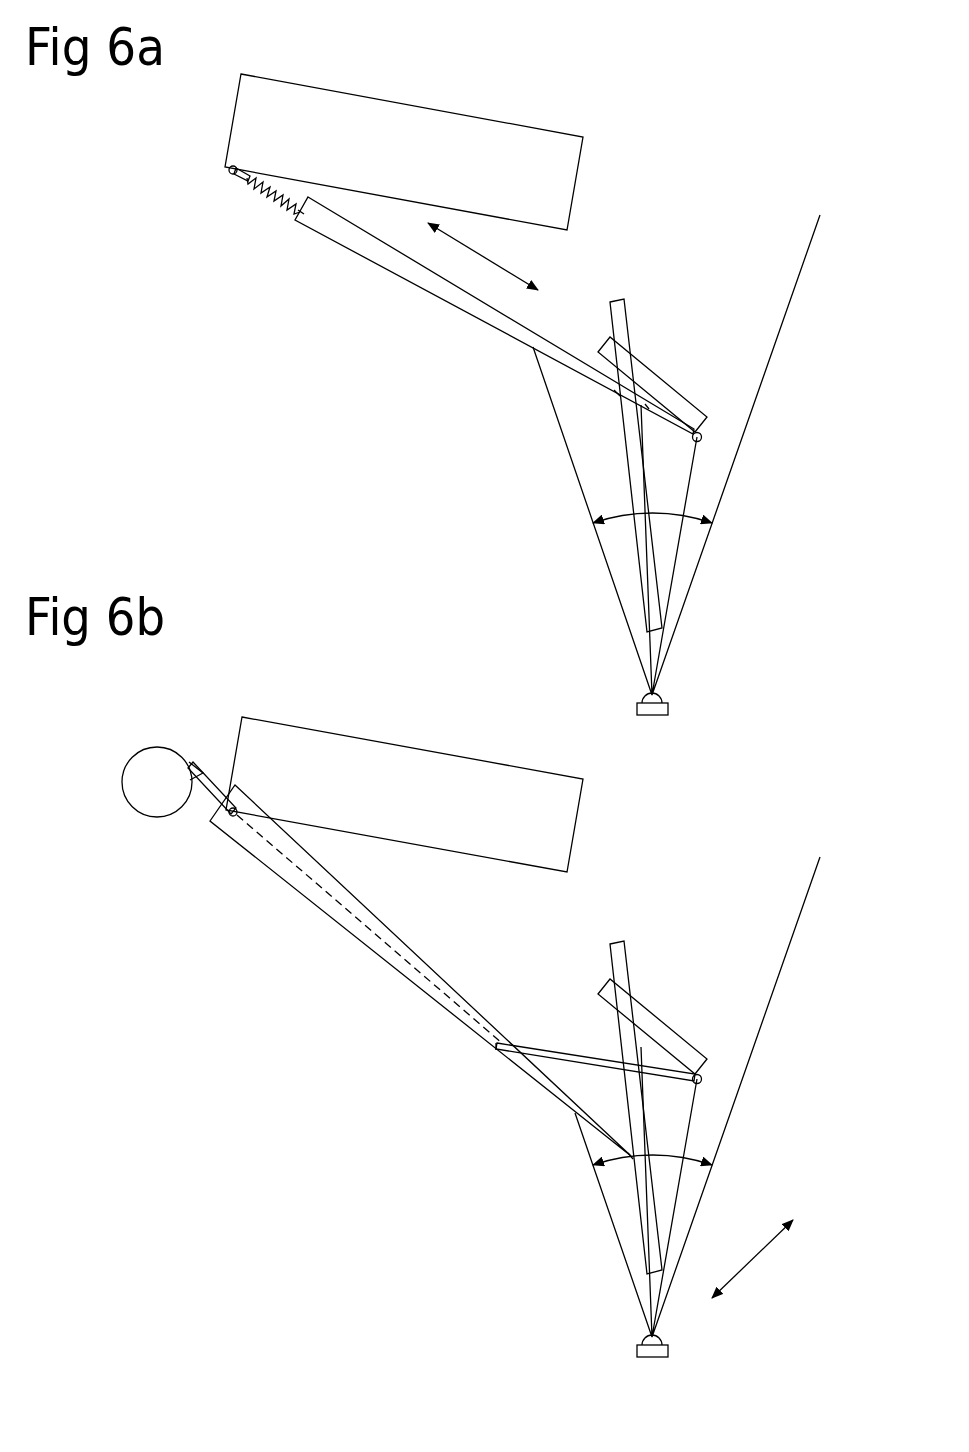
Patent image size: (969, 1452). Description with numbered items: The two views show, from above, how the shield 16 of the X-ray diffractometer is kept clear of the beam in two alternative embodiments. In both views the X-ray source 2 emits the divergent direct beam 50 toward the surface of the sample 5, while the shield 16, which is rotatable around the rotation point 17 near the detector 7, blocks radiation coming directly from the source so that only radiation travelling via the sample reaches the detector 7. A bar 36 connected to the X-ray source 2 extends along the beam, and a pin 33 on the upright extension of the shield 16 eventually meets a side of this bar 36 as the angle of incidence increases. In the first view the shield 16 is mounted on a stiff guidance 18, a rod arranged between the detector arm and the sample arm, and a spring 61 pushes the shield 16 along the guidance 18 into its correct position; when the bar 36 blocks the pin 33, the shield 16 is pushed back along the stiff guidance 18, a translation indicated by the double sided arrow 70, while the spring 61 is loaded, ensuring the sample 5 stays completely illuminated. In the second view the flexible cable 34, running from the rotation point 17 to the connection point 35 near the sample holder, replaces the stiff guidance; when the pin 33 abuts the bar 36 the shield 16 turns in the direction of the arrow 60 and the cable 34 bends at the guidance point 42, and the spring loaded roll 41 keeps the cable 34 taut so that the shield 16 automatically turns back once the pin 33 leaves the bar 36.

In FIG. 6a, the X-ray source 2 is at (668, 712).
In FIG. 6b, the X-ray source 2 is at (668, 1354).
In FIG. 6a, the sample 5 is at (657, 390).
In FIG. 6b, the sample 5 is at (657, 1030).
In FIG. 6a, the detector 7 is at (430, 148).
In FIG. 6b, the detector 7 is at (430, 790).
In FIG. 6a, the shield 16 is at (375, 250).
In FIG. 6b, the shield 16 is at (368, 935).
In FIG. 6a, the rotation point 17 is at (230, 174).
In FIG. 6b, the rotation point 17 is at (235, 822).
In FIG. 6a, the guidance 18 is at (270, 205).
In FIG. 6a, the pin 33 is at (617, 393).
In FIG. 6b, the pin 33 is at (630, 1160).
In FIG. 6b, the cable 34 is at (208, 793).
In FIG. 6a, the connection point 35 is at (702, 437).
In FIG. 6b, the connection point 35 is at (702, 1079).
In FIG. 6a, the bar 36 is at (641, 580).
In FIG. 6b, the bar 36 is at (620, 952).
In FIG. 6b, the spring loaded roll 41 is at (157, 768).
In FIG. 6b, the guidance point 42 is at (495, 1047).
In FIG. 6a, the direct beam 50 is at (677, 515).
In FIG. 6b, the direct beam 50 is at (677, 1157).
In FIG. 6b, the arrow 60 is at (740, 1270).
In FIG. 6a, the spring 61 is at (257, 190).
In FIG. 6a, the double sided arrow 70 is at (492, 264).